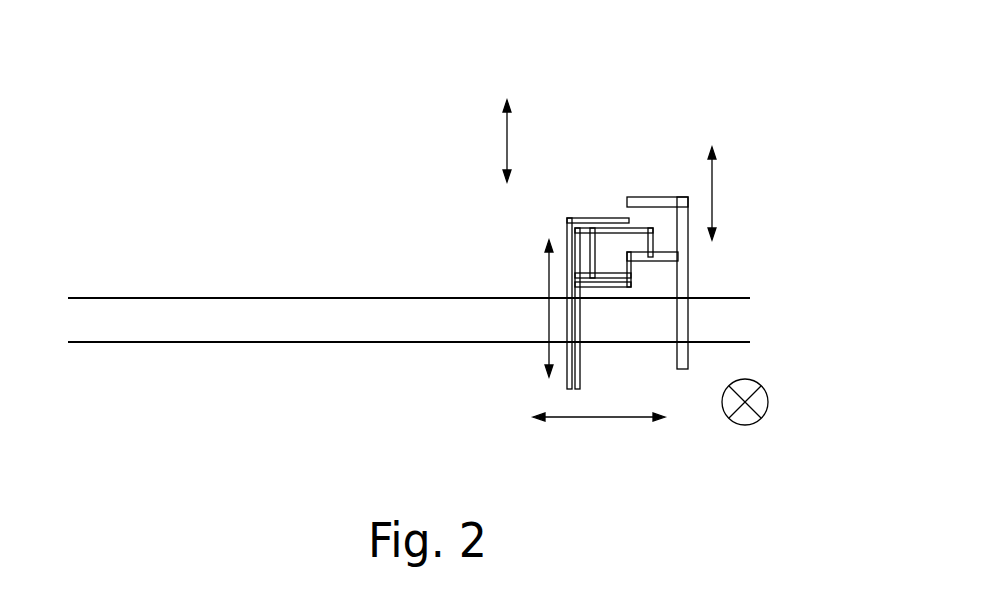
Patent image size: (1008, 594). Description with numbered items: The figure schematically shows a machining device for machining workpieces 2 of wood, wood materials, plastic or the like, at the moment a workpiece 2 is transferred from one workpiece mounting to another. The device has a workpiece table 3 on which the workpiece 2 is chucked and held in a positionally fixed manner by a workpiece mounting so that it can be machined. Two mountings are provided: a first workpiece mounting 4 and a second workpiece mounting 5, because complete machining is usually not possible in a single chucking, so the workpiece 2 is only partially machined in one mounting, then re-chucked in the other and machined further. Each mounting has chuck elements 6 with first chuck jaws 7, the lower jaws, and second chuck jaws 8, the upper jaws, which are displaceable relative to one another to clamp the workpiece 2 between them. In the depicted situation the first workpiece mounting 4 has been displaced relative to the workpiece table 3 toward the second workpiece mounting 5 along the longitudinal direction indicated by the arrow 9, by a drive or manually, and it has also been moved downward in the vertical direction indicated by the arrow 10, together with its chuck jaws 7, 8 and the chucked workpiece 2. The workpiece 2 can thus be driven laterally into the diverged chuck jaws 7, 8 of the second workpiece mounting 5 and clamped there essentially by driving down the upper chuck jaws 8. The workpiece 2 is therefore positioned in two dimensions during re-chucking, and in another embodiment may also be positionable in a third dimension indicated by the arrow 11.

The workpiece 2 is at (615, 243).
The workpiece table 3 is at (118, 330).
The first workpiece mounting 4 is at (565, 217).
The second workpiece mounting 5 is at (684, 286).
The chuck elements 6 is at (587, 112).
The first chuck jaws 7 is at (664, 254).
The second chuck jaws 8 is at (586, 222).
The arrow 9 is at (598, 420).
The arrow 10 is at (547, 316).
The arrow 11 is at (768, 402).